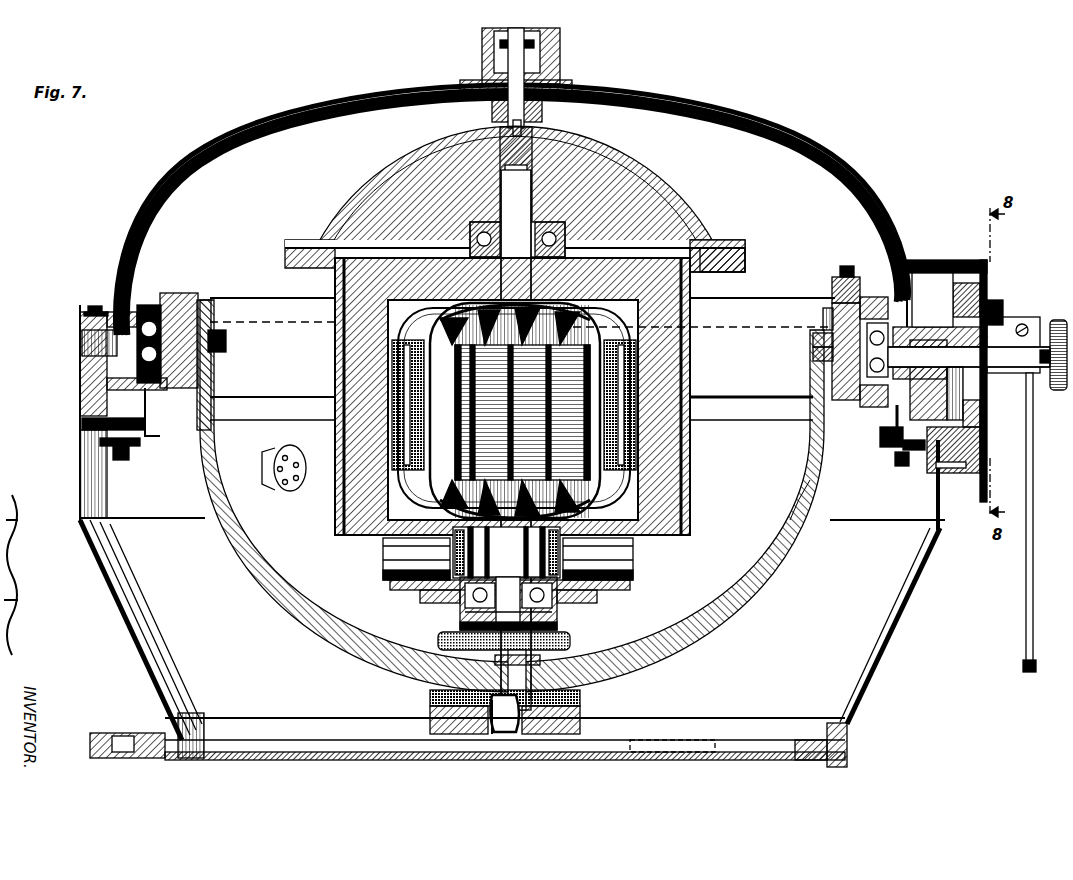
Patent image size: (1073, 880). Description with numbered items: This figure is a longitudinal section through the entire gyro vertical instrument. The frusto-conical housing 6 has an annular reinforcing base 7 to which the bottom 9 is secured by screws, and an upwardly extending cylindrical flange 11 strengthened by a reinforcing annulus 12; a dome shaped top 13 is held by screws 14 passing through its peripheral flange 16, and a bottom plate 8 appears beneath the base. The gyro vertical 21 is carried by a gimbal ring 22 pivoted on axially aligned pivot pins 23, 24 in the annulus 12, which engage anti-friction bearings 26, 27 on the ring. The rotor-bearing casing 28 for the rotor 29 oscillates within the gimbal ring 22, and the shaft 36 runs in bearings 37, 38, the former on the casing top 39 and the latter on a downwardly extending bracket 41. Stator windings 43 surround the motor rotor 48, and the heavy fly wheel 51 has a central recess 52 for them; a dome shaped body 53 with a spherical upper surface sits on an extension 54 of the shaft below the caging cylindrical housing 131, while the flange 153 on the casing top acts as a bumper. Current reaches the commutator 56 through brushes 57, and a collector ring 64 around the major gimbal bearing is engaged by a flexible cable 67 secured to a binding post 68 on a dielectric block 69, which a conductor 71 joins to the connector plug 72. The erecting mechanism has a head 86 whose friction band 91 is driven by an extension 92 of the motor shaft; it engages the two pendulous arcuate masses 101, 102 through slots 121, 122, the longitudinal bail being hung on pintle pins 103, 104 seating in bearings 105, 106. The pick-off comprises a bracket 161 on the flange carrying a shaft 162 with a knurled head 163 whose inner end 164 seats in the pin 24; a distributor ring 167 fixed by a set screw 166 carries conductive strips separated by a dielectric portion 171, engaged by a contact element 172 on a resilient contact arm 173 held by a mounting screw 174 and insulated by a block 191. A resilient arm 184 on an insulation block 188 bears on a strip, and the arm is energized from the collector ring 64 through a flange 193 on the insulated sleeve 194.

The housing 6 is at (878, 658).
The annular reinforcing base 7 is at (165, 756).
The base plate 8 is at (292, 762).
The bottom 9 is at (172, 762).
The cylindrical flange 11 is at (80, 466).
The reinforcing annulus 12 is at (82, 368).
The dome shaped top 13 is at (296, 108).
The screws 14 is at (100, 310).
The peripheral flange 16 is at (86, 314).
The gyro vertical 21 is at (690, 400).
The gimbal ring 22 is at (742, 316).
The pivot pin 23 is at (90, 340).
The pivot pin 24 is at (495, 399).
The anti-friction bearing 26 is at (180, 296).
The anti-friction bearing 27 is at (876, 297).
The rotor-bearing casing 28 is at (690, 472).
The rotor 29 is at (705, 236).
The shaft 36 is at (517, 440).
The bearing 37 is at (663, 203).
The bearing 38 is at (560, 606).
The top of the rotor-bearing casing 39 is at (718, 246).
The bracket 41 is at (460, 606).
The stator windings 43 is at (326, 537).
The rotor 48 is at (578, 366).
The fly wheel 51 is at (665, 447).
The central recess 52 is at (625, 505).
The dome shaped body 53 is at (638, 182).
The extension 54 is at (560, 165).
The commutator 56 is at (506, 552).
The brushes 57 is at (442, 555).
The collector ring 64 is at (148, 304).
The flexible cable 67 is at (150, 440).
The binding post 68 is at (132, 462).
The block 69 is at (82, 436).
The conductor 71 is at (138, 448).
The connector plug 72 is at (268, 456).
The head 86 is at (512, 740).
The friction band 91 is at (572, 641).
The extension 92 is at (500, 660).
The arcuate mass 101 is at (754, 602).
The arcuate mass 102 is at (580, 712).
The pintle pin 103 is at (228, 344).
The pintle pin 104 is at (816, 356).
The bearing 105 is at (212, 300).
The bearing 106 is at (814, 346).
The slot 121 is at (810, 525).
The slot 122 is at (495, 736).
The cylindrical housing 131 is at (556, 70).
The flange 153 is at (745, 256).
The bracket 161 is at (1002, 322).
The shaft 162 is at (1032, 325).
The knurled head 163 is at (1055, 320).
The inner end 164 is at (922, 346).
The set screw 166 is at (966, 432).
The distributor ring 167 is at (984, 278).
The portion of dielectric material 171 is at (958, 258).
The contact element 172 is at (976, 262).
The resilient contact arm 173 is at (913, 262).
The mounting screw 174 is at (846, 266).
The resilient arm 184 is at (980, 448).
The block of insulation material 188 is at (975, 470).
The block of dielectric material 191 is at (832, 292).
The flange 193 is at (826, 320).
The sleeve 194 is at (900, 326).